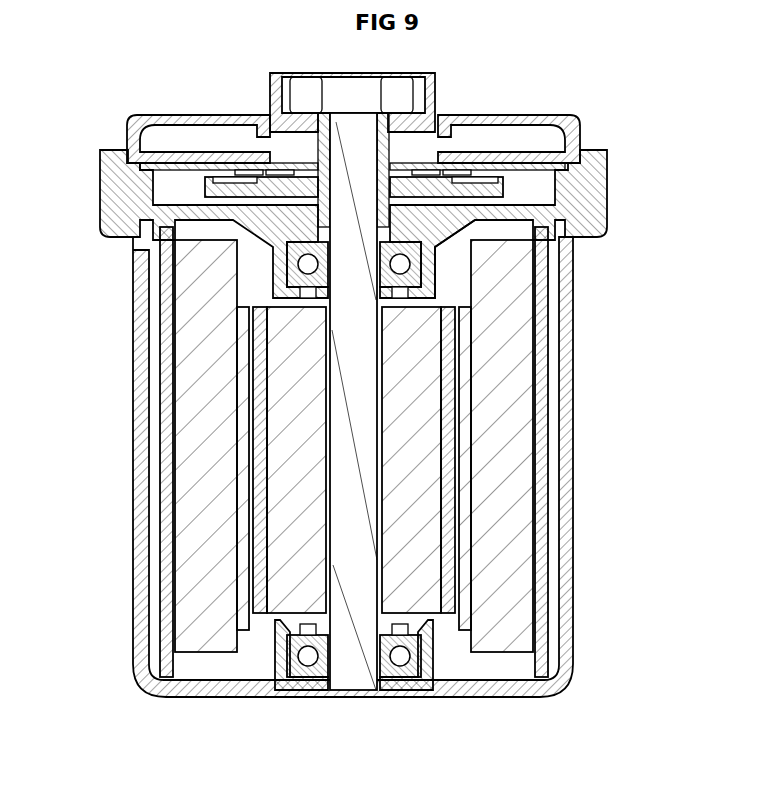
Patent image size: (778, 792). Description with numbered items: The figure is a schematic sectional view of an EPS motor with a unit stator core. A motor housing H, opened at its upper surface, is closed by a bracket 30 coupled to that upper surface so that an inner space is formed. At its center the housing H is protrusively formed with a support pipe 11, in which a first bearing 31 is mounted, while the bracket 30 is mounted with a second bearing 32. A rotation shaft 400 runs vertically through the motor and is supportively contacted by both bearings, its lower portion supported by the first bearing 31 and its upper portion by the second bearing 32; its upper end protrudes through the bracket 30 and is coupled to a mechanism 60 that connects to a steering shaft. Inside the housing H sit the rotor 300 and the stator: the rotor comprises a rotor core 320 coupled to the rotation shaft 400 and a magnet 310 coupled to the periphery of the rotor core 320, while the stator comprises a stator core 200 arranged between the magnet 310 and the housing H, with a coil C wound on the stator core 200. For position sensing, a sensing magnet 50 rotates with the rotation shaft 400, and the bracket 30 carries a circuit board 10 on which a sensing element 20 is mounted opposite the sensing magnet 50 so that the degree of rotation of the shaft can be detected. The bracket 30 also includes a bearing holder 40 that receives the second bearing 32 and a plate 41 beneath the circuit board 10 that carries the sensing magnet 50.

The circuit board 10 is at (527, 160).
The support pipe 11 is at (433, 657).
The sensing element 20 is at (452, 172).
The bracket 30 is at (383, 247).
The first bearing 31 is at (398, 680).
The second bearing 32 is at (414, 277).
The bearing holder 40 is at (471, 240).
The sensor plate 41 is at (435, 236).
The sensing magnet 50 is at (480, 190).
The mechanism 60 is at (436, 88).
The stator core 200 is at (286, 452).
The coil C is at (185, 455).
The rotor 300 is at (497, 460).
The magnet 310 is at (455, 440).
The rotor core 320 is at (430, 490).
The rotation shaft 400 is at (362, 560).
The motor housing H is at (568, 626).